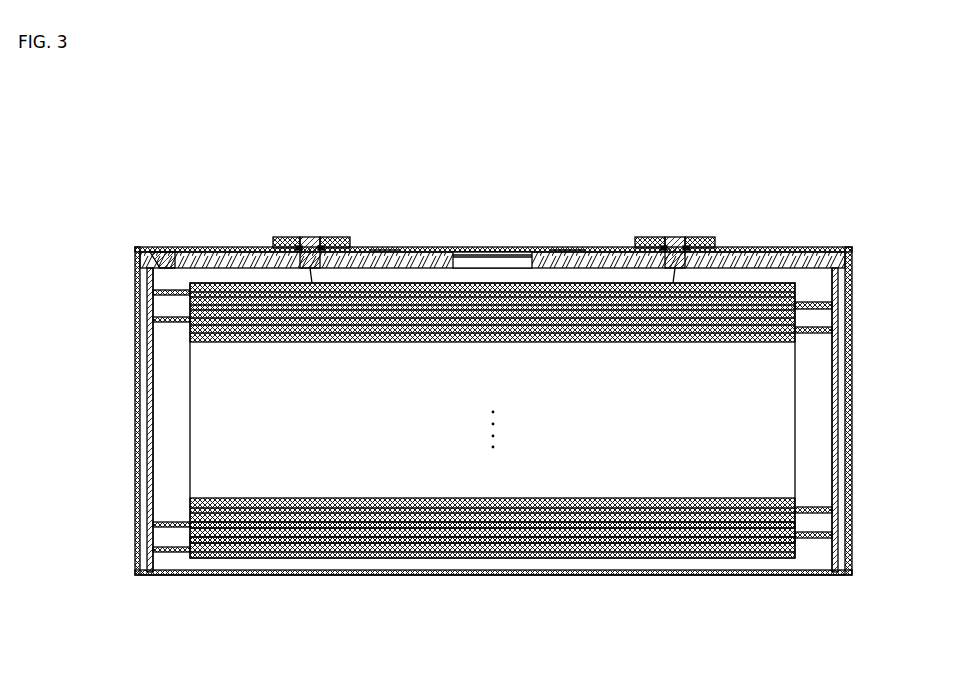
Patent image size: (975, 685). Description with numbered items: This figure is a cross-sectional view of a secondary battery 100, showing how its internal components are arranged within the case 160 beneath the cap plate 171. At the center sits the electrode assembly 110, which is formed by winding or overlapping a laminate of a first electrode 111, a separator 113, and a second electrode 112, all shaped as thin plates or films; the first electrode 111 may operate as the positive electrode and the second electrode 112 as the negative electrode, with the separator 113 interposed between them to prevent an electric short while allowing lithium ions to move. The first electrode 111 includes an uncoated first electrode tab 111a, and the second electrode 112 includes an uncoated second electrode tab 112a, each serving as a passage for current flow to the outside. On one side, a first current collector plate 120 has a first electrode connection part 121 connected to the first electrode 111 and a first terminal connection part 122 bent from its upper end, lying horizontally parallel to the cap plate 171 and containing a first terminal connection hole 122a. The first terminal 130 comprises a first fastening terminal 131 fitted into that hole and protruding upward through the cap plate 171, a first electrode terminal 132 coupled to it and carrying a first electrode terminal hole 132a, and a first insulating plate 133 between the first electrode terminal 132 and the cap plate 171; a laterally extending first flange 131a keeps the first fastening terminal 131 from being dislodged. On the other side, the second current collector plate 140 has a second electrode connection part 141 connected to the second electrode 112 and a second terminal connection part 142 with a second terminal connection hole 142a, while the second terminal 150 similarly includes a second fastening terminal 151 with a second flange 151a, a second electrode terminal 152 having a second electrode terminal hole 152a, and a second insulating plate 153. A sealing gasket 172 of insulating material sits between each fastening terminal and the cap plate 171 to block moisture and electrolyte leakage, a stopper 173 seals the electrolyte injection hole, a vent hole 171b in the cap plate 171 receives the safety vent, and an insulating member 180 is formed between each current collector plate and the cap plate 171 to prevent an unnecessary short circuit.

The secondary battery 100 is at (31, 110).
The electrode assembly 110 is at (522, 576).
The first electrode 111 is at (298, 556).
The first electrode tab 111a is at (175, 530).
The second electrode 112 is at (422, 560).
The second electrode tab 112a is at (812, 538).
The separator 113 is at (355, 560).
The first current collector plate 120 is at (140, 432).
The first electrode connection part 121 is at (152, 490).
The first terminal connection part 122 is at (205, 263).
The first terminal connection hole 122a is at (195, 332).
The first terminal 130 is at (228, 158).
The first fastening terminal 131 is at (310, 237).
The first flange 131a is at (321, 240).
The first electrode terminal 132 is at (270, 240).
The first electrode terminal hole 132a is at (298, 240).
The first insulating plate 133 is at (352, 238).
The second current collector plate 140 is at (845, 432).
The second electrode connection part 141 is at (838, 490).
The second terminal connection part 142 is at (775, 262).
The second terminal connection hole 142a is at (795, 333).
The second terminal 150 is at (592, 158).
The second fastening terminal 151 is at (675, 237).
The second flange 151a is at (685, 240).
The second electrode terminal 152 is at (635, 240).
The second electrode terminal hole 152a is at (666, 240).
The second insulating plate 153 is at (712, 238).
The case 160 is at (639, 582).
The cap plate 171 is at (457, 250).
The vent hole 171b is at (517, 254).
The sealing gasket 172 is at (383, 248).
The stopper 173 is at (567, 250).
The insulating member 180 is at (157, 246).